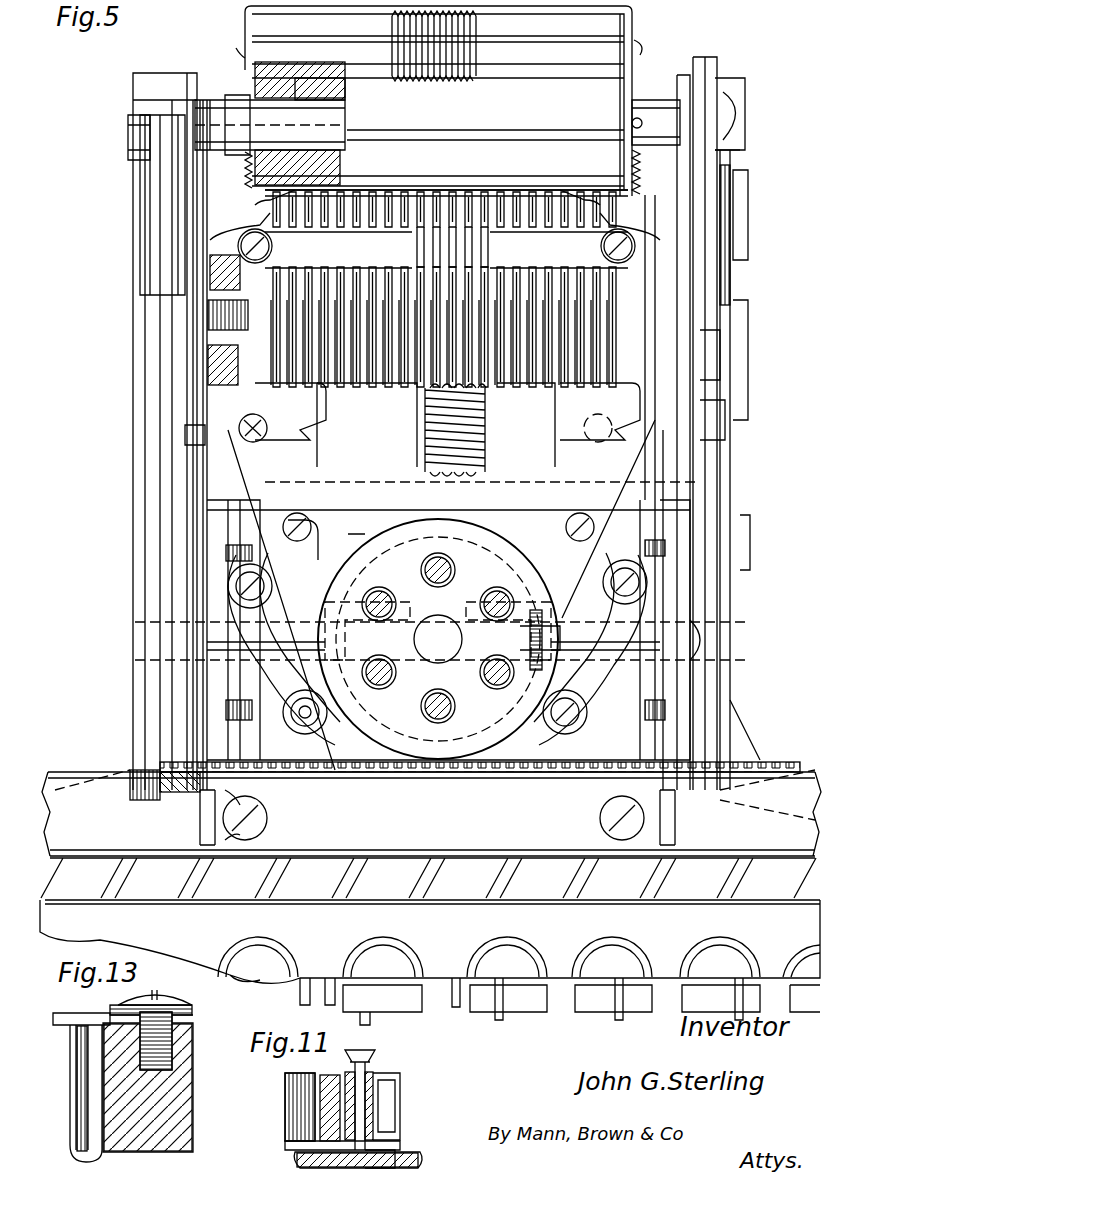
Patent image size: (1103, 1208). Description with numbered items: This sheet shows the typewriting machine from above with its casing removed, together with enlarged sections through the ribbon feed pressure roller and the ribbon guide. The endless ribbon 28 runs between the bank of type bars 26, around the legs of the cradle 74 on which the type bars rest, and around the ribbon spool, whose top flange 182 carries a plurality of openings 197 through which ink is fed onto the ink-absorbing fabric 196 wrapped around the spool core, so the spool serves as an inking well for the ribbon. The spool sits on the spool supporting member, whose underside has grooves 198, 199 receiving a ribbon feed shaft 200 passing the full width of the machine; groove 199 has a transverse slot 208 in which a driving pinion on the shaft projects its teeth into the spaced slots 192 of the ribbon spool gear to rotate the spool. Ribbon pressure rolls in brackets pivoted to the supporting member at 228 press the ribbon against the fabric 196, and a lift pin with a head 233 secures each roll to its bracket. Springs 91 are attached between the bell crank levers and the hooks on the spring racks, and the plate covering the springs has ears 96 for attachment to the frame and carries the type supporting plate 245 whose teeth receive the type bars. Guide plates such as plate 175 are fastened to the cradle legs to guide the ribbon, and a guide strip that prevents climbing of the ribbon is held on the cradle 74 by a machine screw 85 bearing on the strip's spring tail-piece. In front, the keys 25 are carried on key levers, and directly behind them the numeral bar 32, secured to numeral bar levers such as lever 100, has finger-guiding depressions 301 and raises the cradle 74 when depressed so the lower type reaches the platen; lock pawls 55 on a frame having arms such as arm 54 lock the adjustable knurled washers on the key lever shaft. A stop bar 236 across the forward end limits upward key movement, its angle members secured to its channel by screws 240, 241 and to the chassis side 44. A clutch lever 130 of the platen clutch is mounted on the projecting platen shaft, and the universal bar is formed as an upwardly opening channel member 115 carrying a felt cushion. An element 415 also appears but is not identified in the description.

In FIG. 5, the ribbon 28 is at (413, 190).
In FIG. 13, the ribbon 28 is at (110, 1135).
In FIG. 11, the ribbon 28 is at (290, 1089).
In FIG. 5, the bank of type bars 26 is at (400, 270).
In FIG. 5, the top flange 182 is at (430, 585).
In FIG. 5, the stop bar 236 is at (420, 826).
In FIG. 5, the numeral bar 32 is at (428, 930).
In FIG. 5, the depressions 301 is at (690, 965).
In FIG. 5, the cradle 74 is at (215, 255).
In FIG. 13, the cradle 74 is at (180, 1104).
In FIG. 5, the machine screw 85 is at (270, 250).
In FIG. 13, the machine screw 85 is at (165, 995).
In FIG. 5, the springs 91 is at (420, 440).
In FIG. 5, the clutch lever 130 is at (717, 60).
In FIG. 5, the side of the chassis 44 is at (135, 80).
In FIG. 5, the numeral bar lever 100 is at (140, 128).
In FIG. 11, the fabric 196 is at (285, 1127).
In FIG. 11, the head 233 is at (355, 1050).
In FIG. 5, the guide plate 175 is at (215, 275).
In FIG. 13, the guide plate 175 is at (100, 1082).
In FIG. 5, the ribbon feed shaft 200 is at (300, 639).
In FIG. 5, the groove 198 is at (350, 580).
In FIG. 5, the groove 199 is at (600, 600).
In FIG. 5, the pivot 228 is at (268, 575).
In FIG. 5, the openings 197 is at (382, 588).
In FIG. 5, the transverse slot 208 is at (497, 590).
In FIG. 5, the slots 192 is at (480, 682).
In FIG. 5, the ears 96 is at (262, 402).
In FIG. 5, the type supporting plate 245 is at (345, 416).
In FIG. 5, the lock pawls 55 is at (250, 494).
In FIG. 5, the arm 54 is at (625, 500).
In FIG. 5, the screw 240 is at (268, 820).
In FIG. 5, the screw 241 is at (600, 820).
In FIG. 5, the keys 25 is at (578, 1012).
In FIG. 5, the plate 415 is at (683, 73).
In FIG. 11, the plate 415 is at (300, 1167).
In FIG. 5, the channel member 115 is at (730, 730).